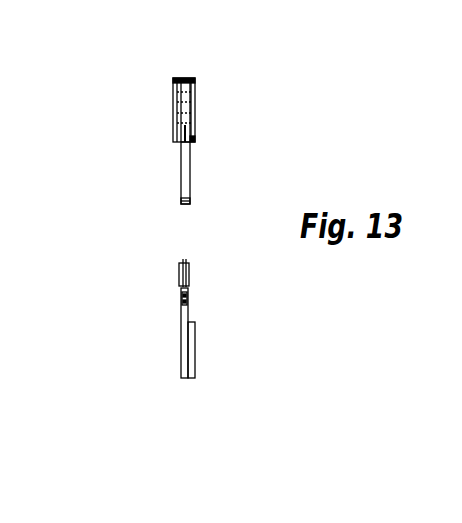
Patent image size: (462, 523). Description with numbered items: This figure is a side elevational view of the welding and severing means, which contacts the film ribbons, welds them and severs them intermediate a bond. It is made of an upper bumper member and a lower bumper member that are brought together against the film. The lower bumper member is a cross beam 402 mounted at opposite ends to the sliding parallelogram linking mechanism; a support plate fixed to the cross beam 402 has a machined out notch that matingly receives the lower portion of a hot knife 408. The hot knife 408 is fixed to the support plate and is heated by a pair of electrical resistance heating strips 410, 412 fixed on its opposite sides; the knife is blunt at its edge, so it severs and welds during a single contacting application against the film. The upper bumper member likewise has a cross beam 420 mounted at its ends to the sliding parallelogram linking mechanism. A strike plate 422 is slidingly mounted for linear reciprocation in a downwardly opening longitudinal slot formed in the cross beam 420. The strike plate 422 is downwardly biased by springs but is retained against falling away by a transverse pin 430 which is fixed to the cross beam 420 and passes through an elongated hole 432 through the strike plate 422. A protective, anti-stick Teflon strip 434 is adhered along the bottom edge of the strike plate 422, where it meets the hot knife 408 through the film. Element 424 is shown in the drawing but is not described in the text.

The cross beam 402 is at (196, 355).
The hot knife 408 is at (180, 262).
The electrical resistance heating strip 410 is at (180, 286).
The electrical resistance heating strip 412 is at (191, 283).
The cross beam 420 is at (187, 78).
The strike plate 422 is at (181, 190).
The latch 424 is at (195, 136).
The transverse pin 430 is at (190, 105).
The elongated hole 432 is at (188, 134).
The Teflon strip 434 is at (186, 205).